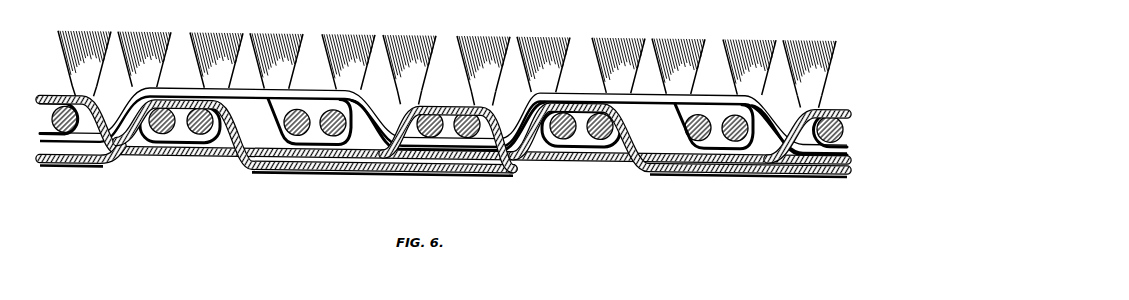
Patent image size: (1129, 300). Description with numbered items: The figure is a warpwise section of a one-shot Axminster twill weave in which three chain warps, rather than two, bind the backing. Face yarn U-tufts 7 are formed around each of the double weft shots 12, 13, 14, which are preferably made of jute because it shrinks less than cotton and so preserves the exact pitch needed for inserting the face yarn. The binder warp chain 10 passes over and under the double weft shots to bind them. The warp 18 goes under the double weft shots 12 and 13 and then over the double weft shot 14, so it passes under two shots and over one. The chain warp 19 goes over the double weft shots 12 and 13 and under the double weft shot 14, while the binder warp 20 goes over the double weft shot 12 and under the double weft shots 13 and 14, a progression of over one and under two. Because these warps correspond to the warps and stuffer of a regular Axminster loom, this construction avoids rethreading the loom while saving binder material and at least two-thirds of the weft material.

The U-tufts 7 is at (807, 36).
The binder warp chain 10 is at (443, 77).
The double weft shot 12 is at (162, 123).
The double weft shot 13 is at (295, 130).
The double weft shot 14 is at (432, 129).
The warp 18 is at (570, 182).
The chain warp 19 is at (125, 112).
The binder warp 20 is at (732, 190).